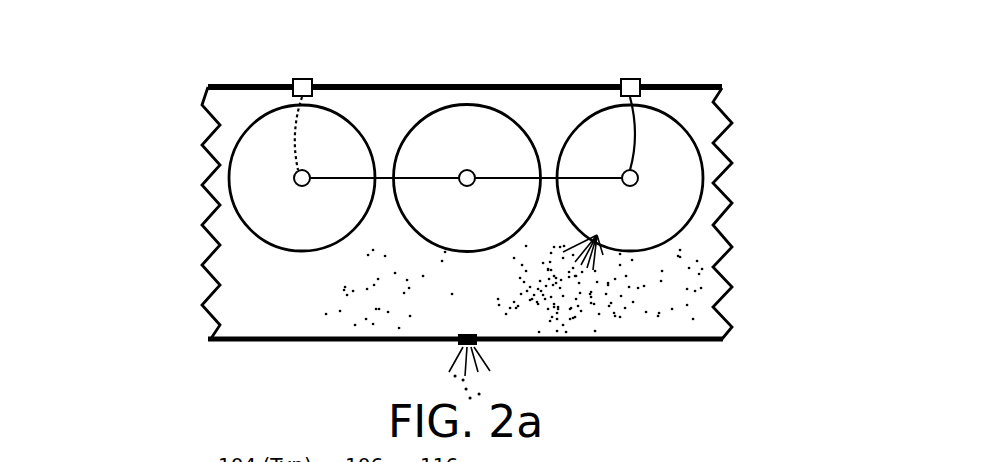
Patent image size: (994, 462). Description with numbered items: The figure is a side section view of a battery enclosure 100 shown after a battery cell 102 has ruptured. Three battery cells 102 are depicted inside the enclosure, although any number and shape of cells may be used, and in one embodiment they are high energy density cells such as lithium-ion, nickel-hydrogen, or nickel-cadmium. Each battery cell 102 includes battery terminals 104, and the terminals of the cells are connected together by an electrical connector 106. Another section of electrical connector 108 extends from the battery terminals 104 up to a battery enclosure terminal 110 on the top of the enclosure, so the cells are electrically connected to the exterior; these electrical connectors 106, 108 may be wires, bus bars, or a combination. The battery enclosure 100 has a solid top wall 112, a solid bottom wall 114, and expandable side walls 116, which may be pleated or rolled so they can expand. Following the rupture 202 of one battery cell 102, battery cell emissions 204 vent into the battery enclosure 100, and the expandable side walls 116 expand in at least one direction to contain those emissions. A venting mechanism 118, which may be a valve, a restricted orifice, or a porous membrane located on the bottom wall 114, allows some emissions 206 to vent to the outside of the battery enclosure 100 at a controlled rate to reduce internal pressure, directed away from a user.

The battery enclosure 100 is at (128, 79).
The battery cell 102 is at (238, 146).
The battery terminal 104 is at (302, 178).
The electrical connector 106 is at (383, 177).
The electrical connector 108 is at (293, 137).
The battery enclosure terminal 110 is at (302, 79).
The solid top wall 112 is at (470, 84).
The solid bottom wall 114 is at (695, 342).
The expandable side wall 116 is at (200, 256).
The venting mechanism 118 is at (457, 345).
The rupture 202 is at (588, 267).
The battery cell emissions 204 is at (593, 314).
The emissions 206 is at (472, 381).